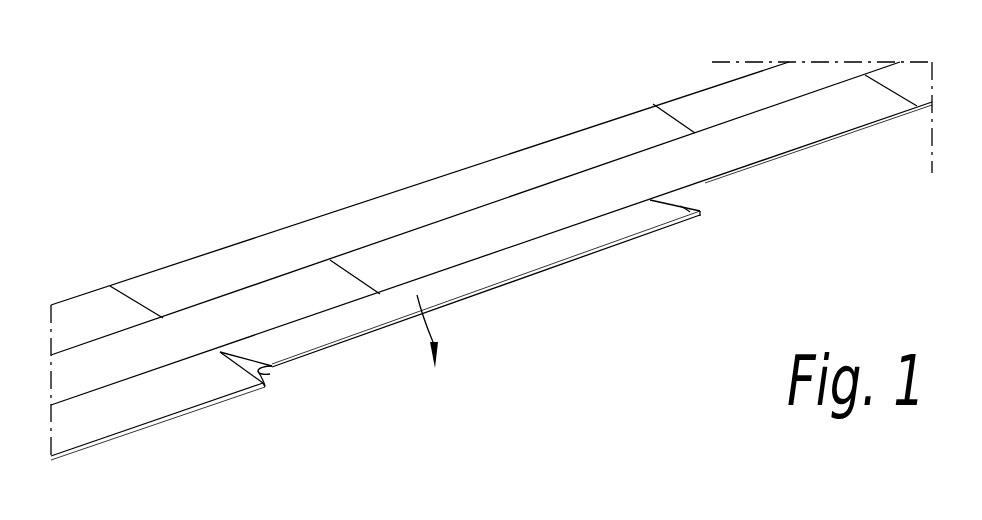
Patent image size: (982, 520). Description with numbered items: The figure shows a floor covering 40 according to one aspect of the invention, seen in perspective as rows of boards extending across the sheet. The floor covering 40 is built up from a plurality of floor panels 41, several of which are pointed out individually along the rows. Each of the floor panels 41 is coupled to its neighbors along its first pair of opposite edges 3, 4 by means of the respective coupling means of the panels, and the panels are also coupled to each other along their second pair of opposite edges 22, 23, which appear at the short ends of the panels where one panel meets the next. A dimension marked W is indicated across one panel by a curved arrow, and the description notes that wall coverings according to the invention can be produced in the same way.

The floor covering 40 is at (203, 109).
The floor panels 41 is at (702, 107).
The first pair of opposite edges 4 is at (535, 243).
The first pair of opposite edges 3 is at (517, 277).
The second pair of opposite edges 22 is at (265, 386).
The second pair of opposite edges 23 is at (272, 368).
The panel width W is at (438, 320).